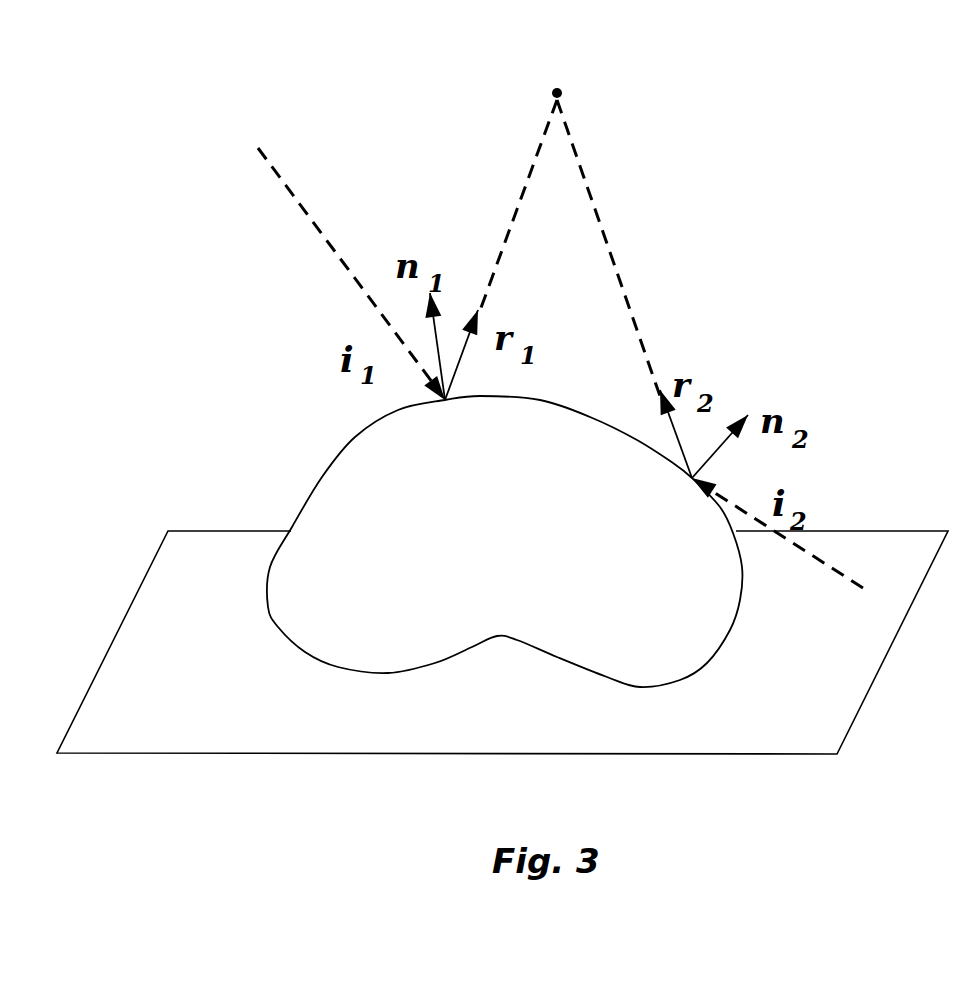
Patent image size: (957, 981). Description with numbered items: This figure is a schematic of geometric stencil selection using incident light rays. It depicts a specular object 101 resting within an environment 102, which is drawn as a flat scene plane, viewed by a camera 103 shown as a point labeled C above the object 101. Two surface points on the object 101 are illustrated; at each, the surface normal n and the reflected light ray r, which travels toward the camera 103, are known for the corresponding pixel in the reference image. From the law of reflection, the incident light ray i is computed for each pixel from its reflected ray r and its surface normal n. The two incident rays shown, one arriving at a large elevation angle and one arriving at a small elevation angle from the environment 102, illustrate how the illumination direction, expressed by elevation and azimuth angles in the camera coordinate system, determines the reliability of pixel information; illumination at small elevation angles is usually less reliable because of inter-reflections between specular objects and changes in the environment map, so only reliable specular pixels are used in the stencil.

The object 101 is at (310, 652).
The environment 102 is at (83, 760).
The camera 103 is at (633, 78).